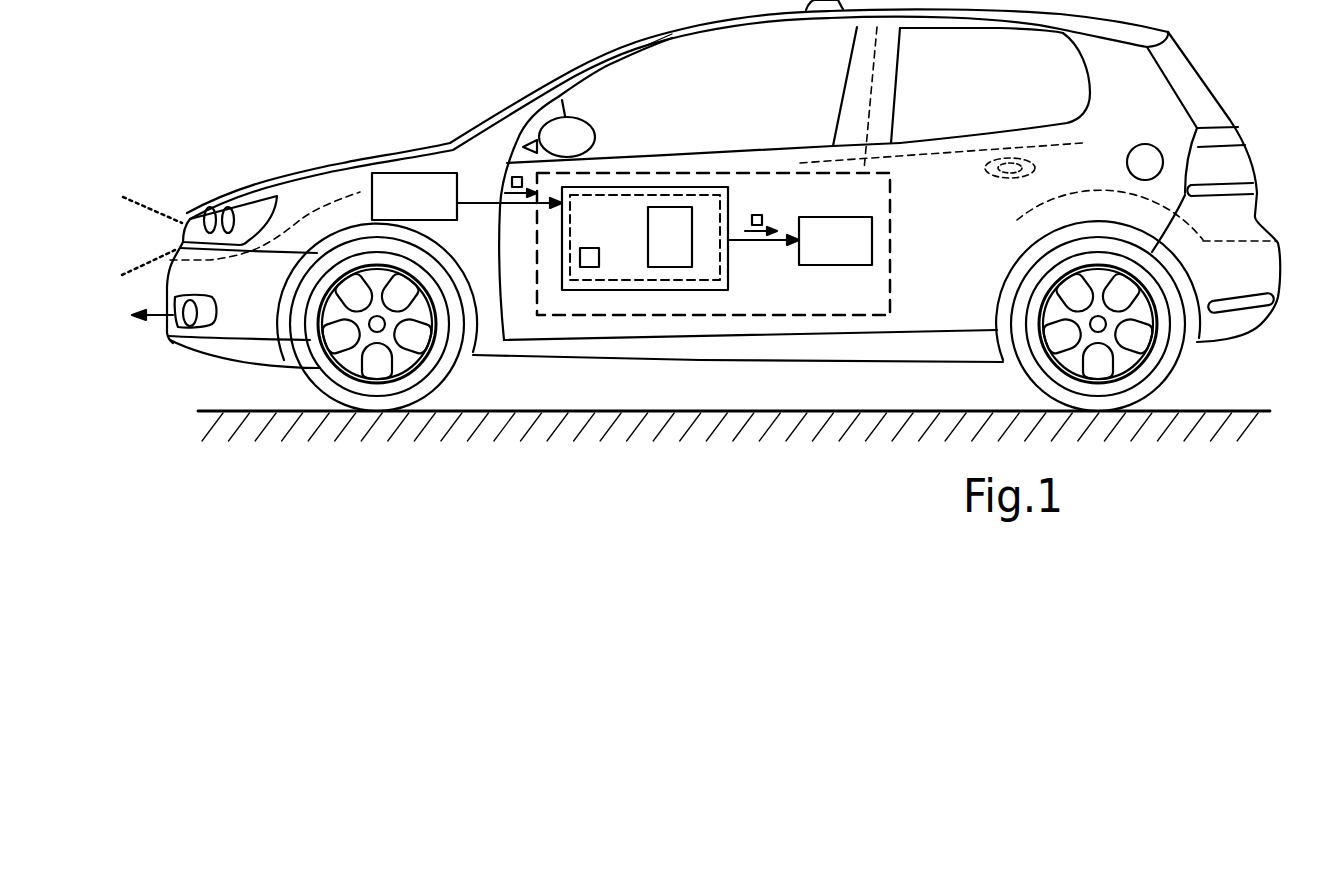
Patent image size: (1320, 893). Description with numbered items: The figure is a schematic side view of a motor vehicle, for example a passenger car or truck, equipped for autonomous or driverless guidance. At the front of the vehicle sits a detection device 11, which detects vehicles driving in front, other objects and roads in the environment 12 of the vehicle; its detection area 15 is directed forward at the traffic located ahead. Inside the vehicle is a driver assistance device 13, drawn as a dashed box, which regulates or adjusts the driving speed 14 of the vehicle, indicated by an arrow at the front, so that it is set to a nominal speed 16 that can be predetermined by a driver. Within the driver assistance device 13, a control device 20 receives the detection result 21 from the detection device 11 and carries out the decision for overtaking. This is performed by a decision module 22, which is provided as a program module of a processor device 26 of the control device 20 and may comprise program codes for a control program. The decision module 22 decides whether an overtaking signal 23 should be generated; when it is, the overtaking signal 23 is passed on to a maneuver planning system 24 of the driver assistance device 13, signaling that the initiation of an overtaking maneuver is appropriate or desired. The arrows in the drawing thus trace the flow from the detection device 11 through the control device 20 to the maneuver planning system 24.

The detection device 11 is at (417, 172).
The environment 12 is at (325, 121).
The driver assistance device 13 is at (713, 173).
The driving speed 14 is at (165, 320).
The detection area 15 is at (140, 200).
The nominal speed 16 is at (595, 248).
The control device 20 is at (625, 187).
The detection result 21 is at (510, 180).
The decision module 22 is at (663, 207).
The overtaking signal 23 is at (757, 214).
The maneuver planning system 24 is at (838, 217).
The processor device 26 is at (722, 270).